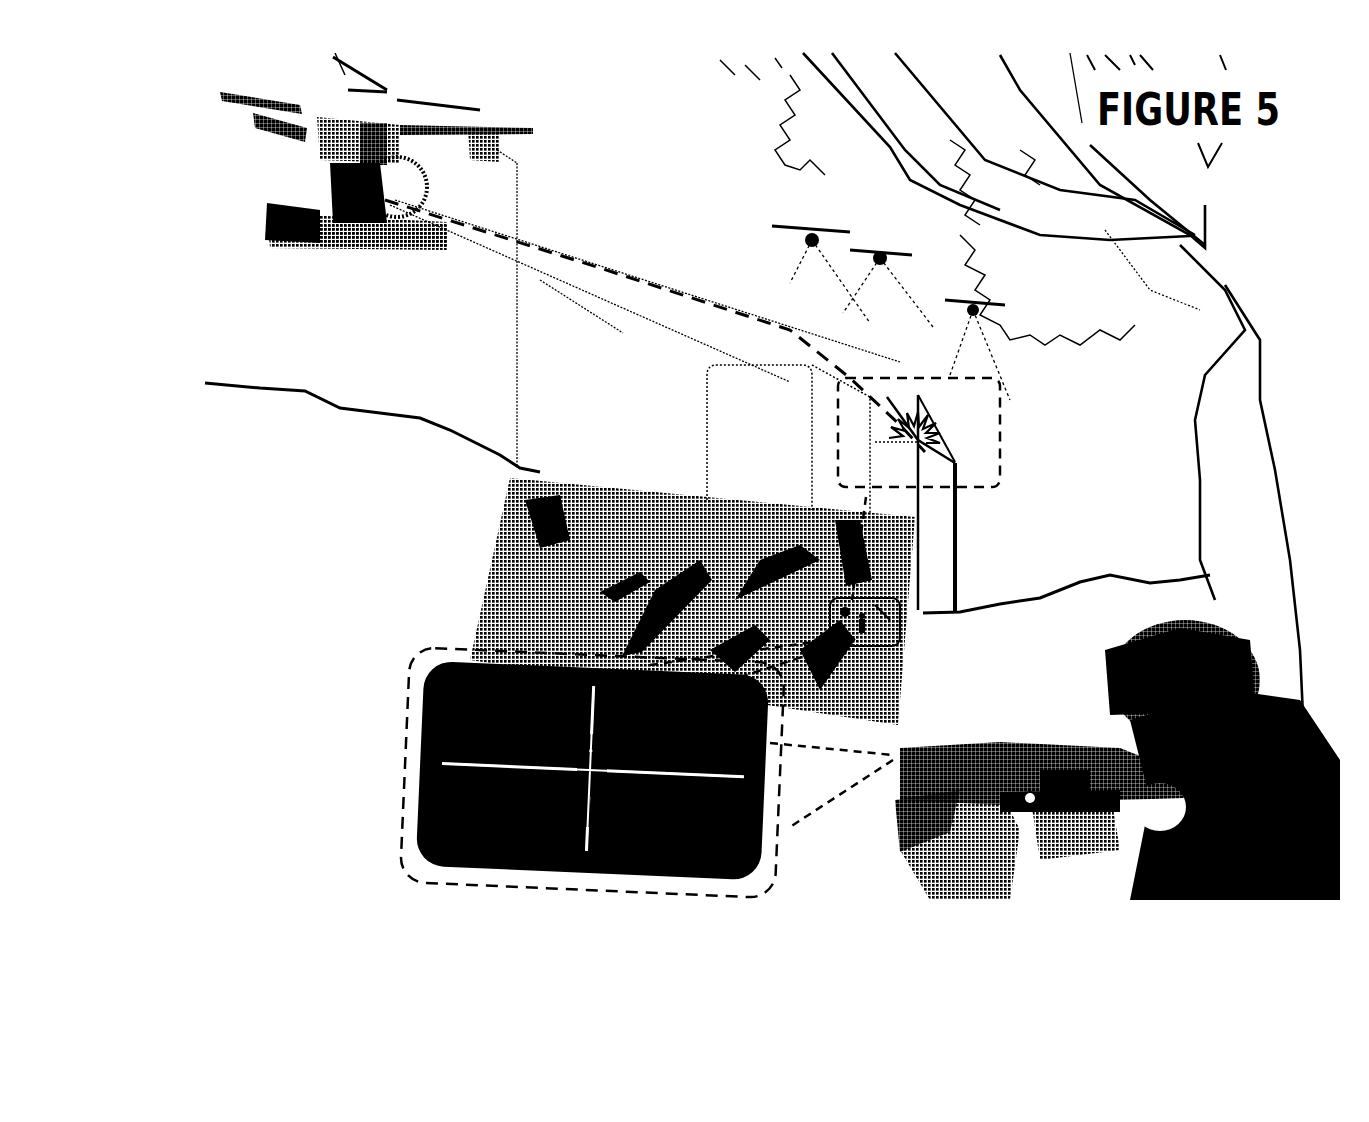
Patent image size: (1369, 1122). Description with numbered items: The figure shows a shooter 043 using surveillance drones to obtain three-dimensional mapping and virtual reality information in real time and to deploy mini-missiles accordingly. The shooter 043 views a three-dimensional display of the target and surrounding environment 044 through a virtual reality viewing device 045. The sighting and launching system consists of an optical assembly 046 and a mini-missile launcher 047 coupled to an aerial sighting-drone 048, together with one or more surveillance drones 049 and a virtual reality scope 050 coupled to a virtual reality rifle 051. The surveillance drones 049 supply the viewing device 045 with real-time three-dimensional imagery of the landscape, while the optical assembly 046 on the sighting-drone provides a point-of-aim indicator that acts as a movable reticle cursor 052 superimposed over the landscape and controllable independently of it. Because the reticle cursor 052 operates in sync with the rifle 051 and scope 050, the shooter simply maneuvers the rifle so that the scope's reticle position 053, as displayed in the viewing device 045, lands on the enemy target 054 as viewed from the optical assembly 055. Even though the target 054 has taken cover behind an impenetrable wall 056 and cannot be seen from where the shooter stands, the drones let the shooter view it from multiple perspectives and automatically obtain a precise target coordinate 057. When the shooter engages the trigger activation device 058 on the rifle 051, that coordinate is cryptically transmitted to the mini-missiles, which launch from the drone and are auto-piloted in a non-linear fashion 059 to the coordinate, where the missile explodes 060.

The shooter 043 is at (1232, 614).
The target and surrounding environment 044 is at (608, 477).
The virtual reality (VR) viewing device 045 is at (1089, 668).
The optical assembly 046 is at (345, 191).
The mini-missile launcher 047 is at (396, 252).
The aerial sighting-drone 048 is at (433, 171).
The surveillance drones 049 is at (949, 274).
The virtual reality (VR) scope 050 is at (905, 746).
The virtual reality (VR) rifle 051 is at (1015, 752).
The movable reticle cursor 052 is at (828, 606).
The reticle position 053 is at (578, 762).
The enemy target 054 is at (578, 748).
The optical assembly view 055 is at (728, 313).
The impenetrable wall 056 is at (935, 471).
The precise target coordinate 057 is at (738, 843).
The trigger activation device 058 is at (1029, 808).
The non-linear flight path 059 is at (745, 289).
The explosion 060 is at (962, 435).